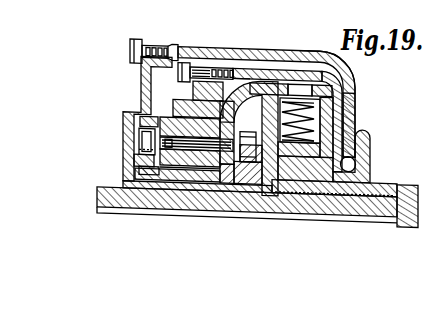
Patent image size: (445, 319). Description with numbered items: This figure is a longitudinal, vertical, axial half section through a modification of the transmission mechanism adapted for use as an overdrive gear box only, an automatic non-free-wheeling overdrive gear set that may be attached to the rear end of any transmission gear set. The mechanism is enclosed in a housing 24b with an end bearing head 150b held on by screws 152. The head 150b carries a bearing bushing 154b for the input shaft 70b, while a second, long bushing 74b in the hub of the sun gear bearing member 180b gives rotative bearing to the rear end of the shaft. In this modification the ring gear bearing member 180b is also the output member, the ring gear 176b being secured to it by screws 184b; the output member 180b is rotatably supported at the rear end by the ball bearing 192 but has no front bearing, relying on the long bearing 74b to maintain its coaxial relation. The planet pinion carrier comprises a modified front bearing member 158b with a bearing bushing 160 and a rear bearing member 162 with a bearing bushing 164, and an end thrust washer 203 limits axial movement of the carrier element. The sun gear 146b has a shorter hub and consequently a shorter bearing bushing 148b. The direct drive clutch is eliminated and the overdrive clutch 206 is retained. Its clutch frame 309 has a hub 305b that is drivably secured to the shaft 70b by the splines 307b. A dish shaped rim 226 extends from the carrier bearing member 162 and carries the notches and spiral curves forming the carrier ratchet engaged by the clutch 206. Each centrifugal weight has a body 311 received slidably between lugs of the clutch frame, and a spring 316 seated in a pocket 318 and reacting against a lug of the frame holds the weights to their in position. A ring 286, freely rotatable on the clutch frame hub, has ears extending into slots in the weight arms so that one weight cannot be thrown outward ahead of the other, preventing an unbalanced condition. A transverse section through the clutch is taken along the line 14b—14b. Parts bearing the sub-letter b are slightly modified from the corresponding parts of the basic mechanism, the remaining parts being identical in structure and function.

The input shaft 70b is at (106, 201).
The bearing bushing 74b is at (362, 176).
The bearing bushing 154b is at (122, 184).
The carrier front bearing member 158b is at (160, 118).
The screws 152 is at (132, 49).
The end bearing head 150b is at (146, 44).
The housing 24b is at (212, 47).
The overdrive clutch 206 is at (313, 50).
The ring gear bearing member 180b is at (355, 84).
The screws 184b is at (183, 60).
The ring gear 176b is at (222, 63).
The dish shaped rim 226 is at (272, 71).
The clutch frame 309 is at (272, 63).
The spring 316 is at (336, 112).
The pocket 318 is at (285, 112).
The ball bearing 192 is at (368, 126).
The weight body 311 is at (258, 125).
The section line 14b is at (277, 100).
The bearing bushing 160 is at (146, 176).
The carrier rear bearing member 162 is at (200, 178).
The sun gear 146b is at (183, 178).
The bearing bushing 148b is at (172, 180).
The bearing bushing 164 is at (212, 178).
The end thrust washer 203 is at (234, 180).
The clutch frame hub 305b is at (238, 181).
The splines 307b is at (250, 181).
The ring 286 is at (292, 187).